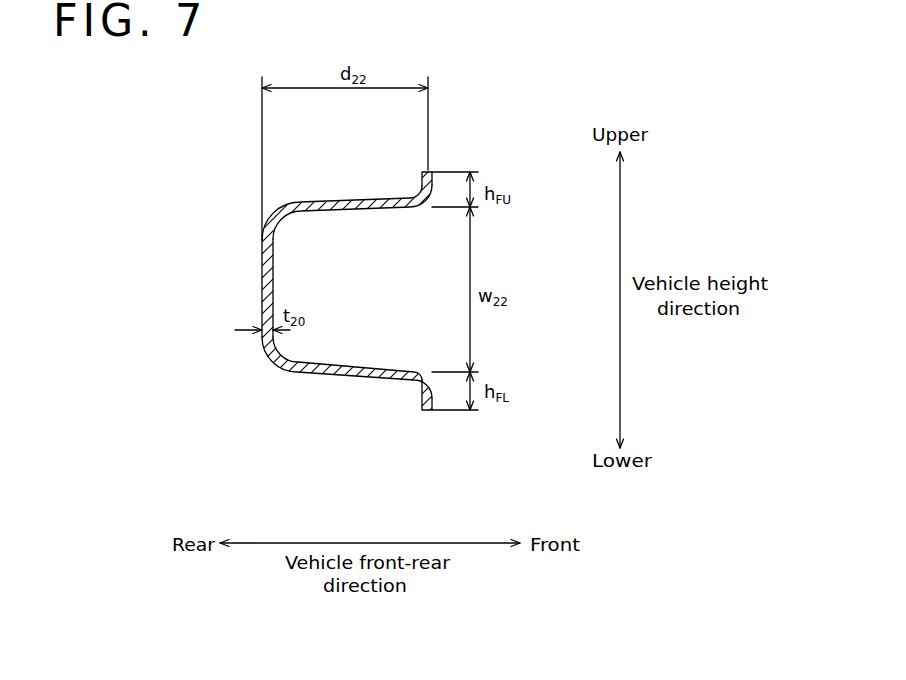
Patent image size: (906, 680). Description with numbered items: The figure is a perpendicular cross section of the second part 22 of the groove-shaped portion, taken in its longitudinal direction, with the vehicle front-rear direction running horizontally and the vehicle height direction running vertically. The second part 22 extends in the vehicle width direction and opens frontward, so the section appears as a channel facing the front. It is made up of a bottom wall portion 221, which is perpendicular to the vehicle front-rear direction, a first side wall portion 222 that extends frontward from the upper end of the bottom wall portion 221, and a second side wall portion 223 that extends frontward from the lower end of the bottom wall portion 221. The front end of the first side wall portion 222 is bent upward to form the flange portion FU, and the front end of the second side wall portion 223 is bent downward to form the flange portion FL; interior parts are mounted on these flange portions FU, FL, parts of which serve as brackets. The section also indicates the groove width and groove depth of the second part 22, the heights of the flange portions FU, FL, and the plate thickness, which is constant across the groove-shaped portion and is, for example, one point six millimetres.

The second part 22 is at (205, 197).
The bottom wall portion 221 is at (262, 292).
The first side wall portion 222 is at (349, 200).
The second side wall portion 223 is at (337, 378).
The flange portion FU is at (431, 170).
The flange portion FL is at (428, 412).